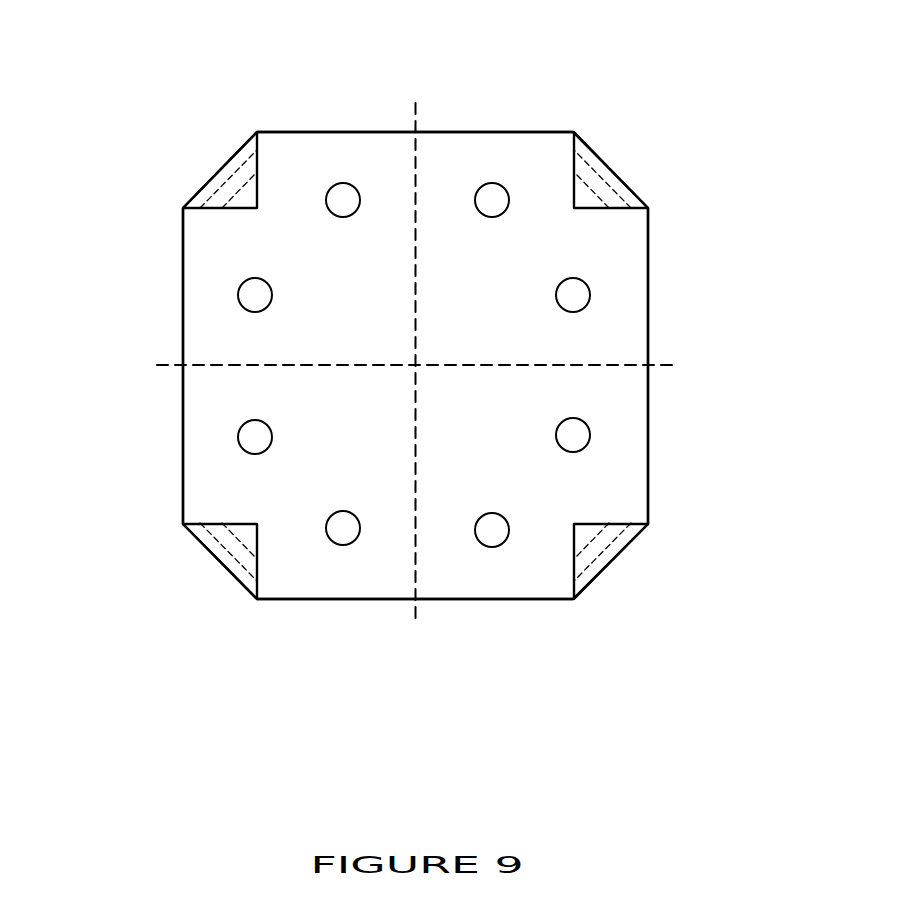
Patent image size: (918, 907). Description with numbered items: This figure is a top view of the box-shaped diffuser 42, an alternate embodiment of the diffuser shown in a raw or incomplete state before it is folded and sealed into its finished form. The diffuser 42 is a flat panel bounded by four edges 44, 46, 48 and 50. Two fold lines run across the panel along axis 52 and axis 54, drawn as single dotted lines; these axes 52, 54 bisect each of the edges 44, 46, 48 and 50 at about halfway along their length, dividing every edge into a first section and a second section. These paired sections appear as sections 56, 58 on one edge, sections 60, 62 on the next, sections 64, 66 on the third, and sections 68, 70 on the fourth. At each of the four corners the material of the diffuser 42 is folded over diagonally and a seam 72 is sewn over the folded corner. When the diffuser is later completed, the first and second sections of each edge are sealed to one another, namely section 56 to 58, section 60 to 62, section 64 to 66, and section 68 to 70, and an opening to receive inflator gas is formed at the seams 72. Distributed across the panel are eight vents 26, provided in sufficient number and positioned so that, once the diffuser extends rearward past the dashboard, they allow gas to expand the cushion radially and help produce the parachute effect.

The vents 26 is at (343, 217).
The box-shaped diffuser 42 is at (126, 150).
The edge 44 is at (462, 86).
The edge 46 is at (712, 407).
The edge 48 is at (466, 636).
The edge 50 is at (125, 400).
The axis 52 is at (674, 356).
The axis 54 is at (414, 618).
The section 56 is at (285, 132).
The section 58 is at (545, 132).
The section 60 is at (648, 282).
The section 62 is at (648, 468).
The section 64 is at (290, 600).
The section 66 is at (515, 600).
The section 68 is at (183, 268).
The section 70 is at (183, 483).
The seam 72 is at (215, 165).